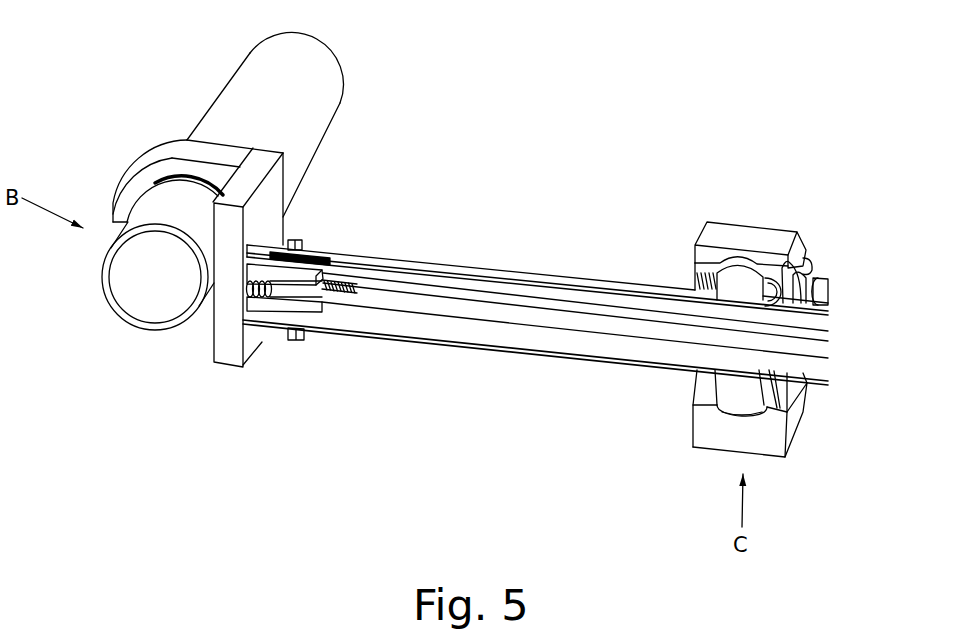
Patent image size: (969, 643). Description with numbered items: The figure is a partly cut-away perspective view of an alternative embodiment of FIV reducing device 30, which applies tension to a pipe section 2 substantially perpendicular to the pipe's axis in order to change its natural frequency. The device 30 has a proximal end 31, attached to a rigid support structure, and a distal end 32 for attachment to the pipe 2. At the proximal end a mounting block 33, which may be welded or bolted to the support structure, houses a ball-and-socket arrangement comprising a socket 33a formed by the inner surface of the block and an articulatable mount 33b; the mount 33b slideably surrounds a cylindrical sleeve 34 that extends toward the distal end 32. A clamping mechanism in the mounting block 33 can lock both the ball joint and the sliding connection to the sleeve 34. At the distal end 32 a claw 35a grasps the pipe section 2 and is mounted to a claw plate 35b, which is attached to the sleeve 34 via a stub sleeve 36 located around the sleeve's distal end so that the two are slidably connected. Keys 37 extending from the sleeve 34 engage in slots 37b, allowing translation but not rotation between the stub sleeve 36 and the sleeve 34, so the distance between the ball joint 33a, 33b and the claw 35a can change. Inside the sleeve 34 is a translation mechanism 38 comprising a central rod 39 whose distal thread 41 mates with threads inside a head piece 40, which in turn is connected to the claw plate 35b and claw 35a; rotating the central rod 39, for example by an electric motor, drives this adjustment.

The pipe section 2 is at (265, 138).
The FIV reducing device 30 is at (572, 124).
The proximal end 31 is at (821, 413).
The distal end 32 is at (243, 385).
The mounting block 33 is at (730, 438).
The socket 33a is at (736, 261).
The articulatable mount 33b is at (732, 393).
The cylindrical sleeve 34 is at (507, 350).
The claw 35a is at (162, 167).
The claw plate 35b is at (273, 207).
The stub sleeve 36 is at (262, 312).
The keys 37 is at (303, 238).
The slots 37b is at (333, 253).
The translation mechanism 38 is at (386, 324).
The central rod 39 is at (458, 307).
The head piece 40 is at (272, 308).
The thread 41 is at (356, 288).